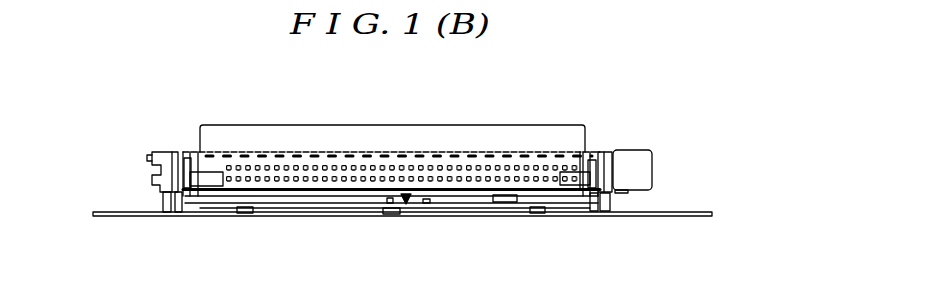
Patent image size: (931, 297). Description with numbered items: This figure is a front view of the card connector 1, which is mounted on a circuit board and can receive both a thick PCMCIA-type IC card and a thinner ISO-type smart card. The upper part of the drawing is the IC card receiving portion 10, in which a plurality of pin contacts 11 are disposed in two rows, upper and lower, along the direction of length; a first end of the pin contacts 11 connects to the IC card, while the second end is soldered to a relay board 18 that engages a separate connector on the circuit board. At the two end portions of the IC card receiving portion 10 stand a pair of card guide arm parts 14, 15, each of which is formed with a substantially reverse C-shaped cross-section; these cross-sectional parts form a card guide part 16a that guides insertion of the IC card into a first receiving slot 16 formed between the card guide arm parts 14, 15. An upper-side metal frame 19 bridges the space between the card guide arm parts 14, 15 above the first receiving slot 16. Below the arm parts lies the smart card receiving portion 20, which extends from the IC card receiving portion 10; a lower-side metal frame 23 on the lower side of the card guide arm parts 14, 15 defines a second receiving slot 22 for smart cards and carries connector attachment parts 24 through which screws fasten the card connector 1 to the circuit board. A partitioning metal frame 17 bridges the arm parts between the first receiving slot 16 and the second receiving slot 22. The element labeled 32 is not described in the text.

The card connector 1 is at (663, 132).
The IC card receiving portion 10 is at (283, 160).
The pin contacts 11 is at (341, 160).
The card guide arm part 14 is at (175, 150).
The card guide arm part 15 is at (600, 156).
The first receiving slot 16 is at (570, 160).
The card guide part 16a is at (187, 150).
The partitioning metal frame 17 is at (335, 196).
The relay board 18 is at (236, 138).
The upper-side metal frame 19 is at (428, 152).
The smart card receiving portion 20 is at (408, 205).
The second receiving slot 22 is at (484, 210).
The lower-side metal frame 23 is at (562, 218).
The connector attachment part 24 is at (108, 218).
The end block 32 is at (644, 167).